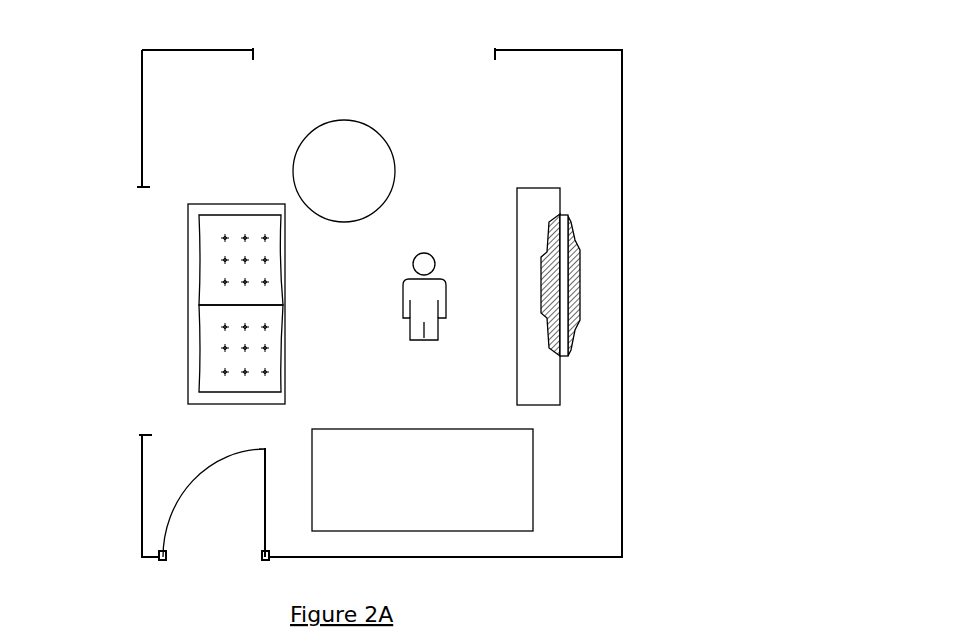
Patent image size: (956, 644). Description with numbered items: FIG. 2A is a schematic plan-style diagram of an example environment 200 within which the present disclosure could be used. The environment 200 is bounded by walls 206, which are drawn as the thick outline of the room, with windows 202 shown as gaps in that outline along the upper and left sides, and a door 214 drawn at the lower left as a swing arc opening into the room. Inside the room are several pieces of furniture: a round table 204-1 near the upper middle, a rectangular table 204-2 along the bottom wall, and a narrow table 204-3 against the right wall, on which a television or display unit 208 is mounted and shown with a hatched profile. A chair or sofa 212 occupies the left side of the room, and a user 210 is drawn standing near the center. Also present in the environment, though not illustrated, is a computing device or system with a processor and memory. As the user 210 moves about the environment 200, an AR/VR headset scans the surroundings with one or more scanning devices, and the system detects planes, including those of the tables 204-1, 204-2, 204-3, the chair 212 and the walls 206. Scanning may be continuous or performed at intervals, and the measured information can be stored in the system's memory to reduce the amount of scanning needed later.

The environment 200 is at (70, 55).
The windows 202 is at (355, 48).
The table 204-1 is at (395, 160).
The table 204-2 is at (533, 487).
The table 204-3 is at (560, 380).
The walls 206 is at (622, 76).
The television or display unit 208 is at (582, 277).
The user 210 is at (400, 294).
The chair or sofa 212 is at (285, 375).
The door 214 is at (265, 503).